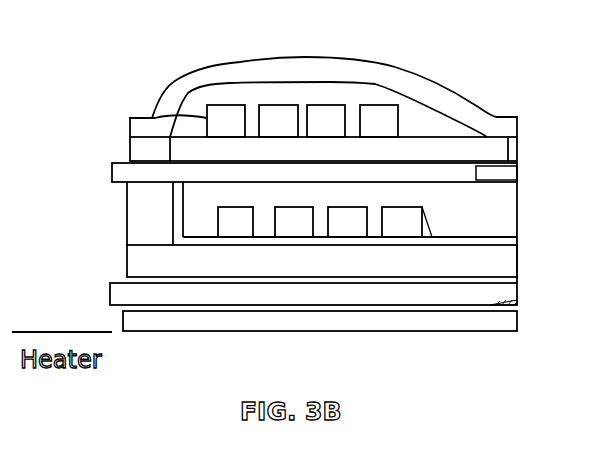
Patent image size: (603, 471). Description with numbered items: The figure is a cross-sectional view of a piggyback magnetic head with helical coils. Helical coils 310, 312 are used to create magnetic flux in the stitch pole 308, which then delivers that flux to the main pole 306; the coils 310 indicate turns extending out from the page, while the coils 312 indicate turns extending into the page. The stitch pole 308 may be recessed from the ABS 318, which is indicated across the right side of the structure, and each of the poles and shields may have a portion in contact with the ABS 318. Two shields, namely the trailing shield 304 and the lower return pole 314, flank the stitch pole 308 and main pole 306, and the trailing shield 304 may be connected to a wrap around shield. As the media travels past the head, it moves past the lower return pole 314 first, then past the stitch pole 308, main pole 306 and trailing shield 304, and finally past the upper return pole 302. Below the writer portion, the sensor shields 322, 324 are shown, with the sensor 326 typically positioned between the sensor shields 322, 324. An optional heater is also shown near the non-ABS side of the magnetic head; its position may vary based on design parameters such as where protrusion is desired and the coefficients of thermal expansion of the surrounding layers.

The upper return pole 302 is at (455, 90).
The trailing shield 304 is at (519, 148).
The main pole 306 is at (519, 174).
The stitch pole 308 is at (468, 182).
The helical coils 310 is at (152, 118).
The helical coils 312 is at (218, 207).
The lower return pole 314 is at (358, 269).
The ABS 318 is at (526, 249).
The sensor shield 322 is at (110, 287).
The sensor shield 324 is at (123, 316).
The sensor 326 is at (512, 300).